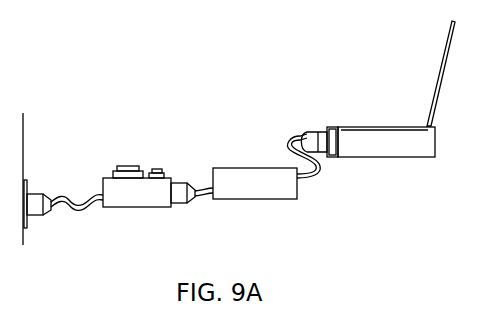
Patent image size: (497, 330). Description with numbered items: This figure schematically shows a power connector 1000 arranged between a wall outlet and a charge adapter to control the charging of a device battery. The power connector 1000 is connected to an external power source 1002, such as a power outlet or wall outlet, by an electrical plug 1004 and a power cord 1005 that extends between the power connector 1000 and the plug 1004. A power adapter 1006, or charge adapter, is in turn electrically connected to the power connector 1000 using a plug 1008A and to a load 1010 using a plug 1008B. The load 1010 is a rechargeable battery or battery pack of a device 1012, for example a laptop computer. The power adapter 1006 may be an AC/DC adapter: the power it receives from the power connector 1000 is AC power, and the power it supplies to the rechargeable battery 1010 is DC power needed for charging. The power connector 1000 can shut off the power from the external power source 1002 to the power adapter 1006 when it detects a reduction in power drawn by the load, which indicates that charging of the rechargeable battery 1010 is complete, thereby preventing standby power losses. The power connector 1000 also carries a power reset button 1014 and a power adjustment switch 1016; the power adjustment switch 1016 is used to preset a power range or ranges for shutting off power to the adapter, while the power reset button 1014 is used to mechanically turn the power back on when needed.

The power connector 1000 is at (142, 151).
The external power source 1002 is at (26, 181).
The electrical plug 1004 is at (30, 215).
The power cord 1005 is at (93, 204).
The power adapter 1006 is at (266, 205).
The plug 1008A is at (183, 204).
The plug 1008B is at (322, 132).
The load 1010 is at (338, 148).
The device 1012 is at (373, 161).
The power reset button 1014 is at (128, 167).
The power adjustment switch 1016 is at (155, 171).